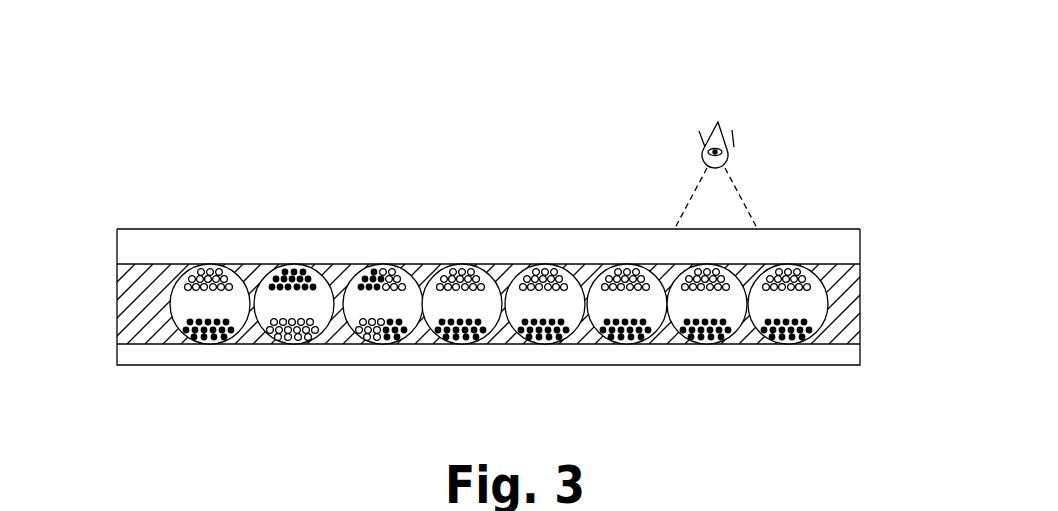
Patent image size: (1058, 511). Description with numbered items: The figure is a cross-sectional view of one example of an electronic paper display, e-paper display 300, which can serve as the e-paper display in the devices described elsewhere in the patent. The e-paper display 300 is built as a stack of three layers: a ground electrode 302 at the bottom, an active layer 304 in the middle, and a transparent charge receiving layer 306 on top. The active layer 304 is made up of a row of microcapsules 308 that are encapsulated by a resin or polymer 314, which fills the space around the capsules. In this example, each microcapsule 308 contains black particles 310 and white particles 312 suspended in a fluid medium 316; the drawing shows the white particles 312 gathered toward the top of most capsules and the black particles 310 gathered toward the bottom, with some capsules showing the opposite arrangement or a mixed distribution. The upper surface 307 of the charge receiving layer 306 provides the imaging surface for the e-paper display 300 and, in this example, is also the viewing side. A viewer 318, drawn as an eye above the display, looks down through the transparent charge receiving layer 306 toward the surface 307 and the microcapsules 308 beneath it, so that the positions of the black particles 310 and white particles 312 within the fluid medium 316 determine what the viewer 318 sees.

The e-paper display 300 is at (491, 101).
The ground electrode 302 is at (857, 357).
The active layer 304 is at (880, 265).
The transparent charge receiving layer 306 is at (857, 250).
The surface 307 is at (545, 229).
The microcapsule 308 is at (268, 268).
The black particles 310 is at (187, 345).
The white particles 312 is at (185, 268).
The resin or polymer 314 is at (128, 308).
The fluid medium 316 is at (341, 268).
The viewer 318 is at (730, 143).